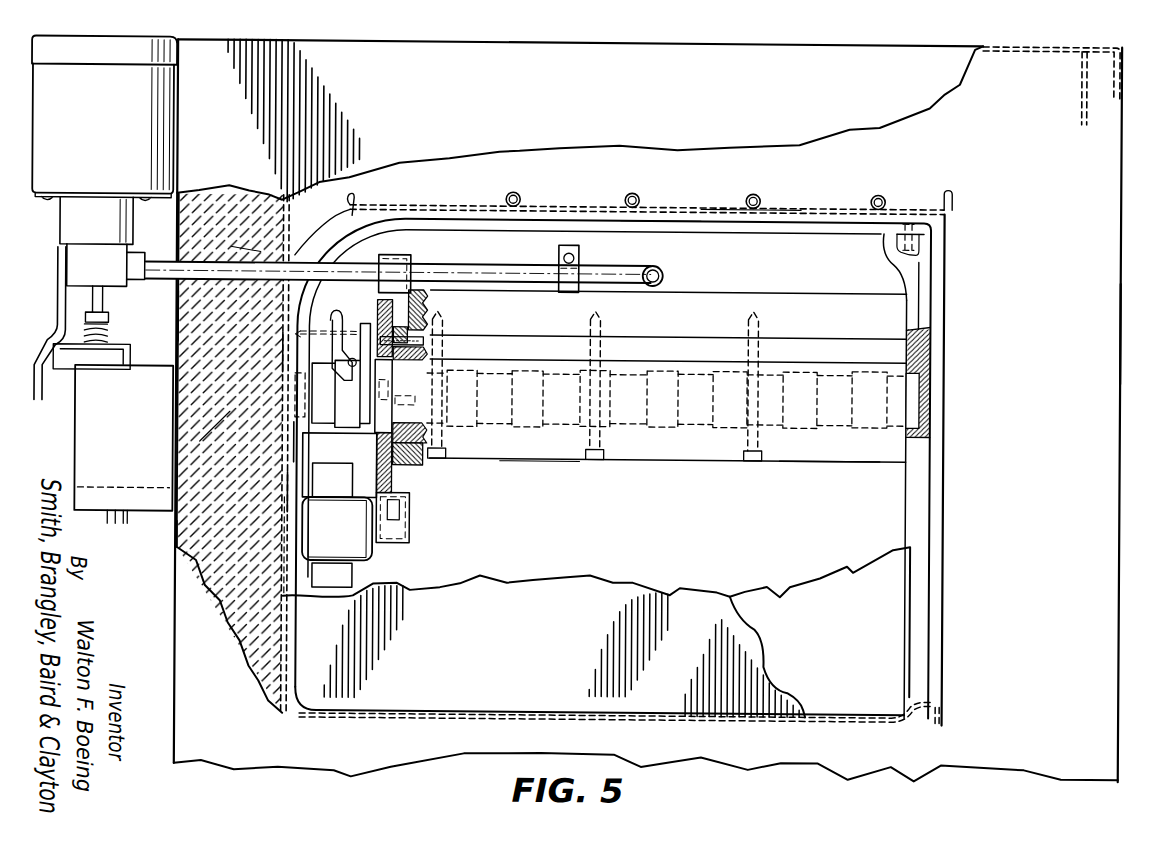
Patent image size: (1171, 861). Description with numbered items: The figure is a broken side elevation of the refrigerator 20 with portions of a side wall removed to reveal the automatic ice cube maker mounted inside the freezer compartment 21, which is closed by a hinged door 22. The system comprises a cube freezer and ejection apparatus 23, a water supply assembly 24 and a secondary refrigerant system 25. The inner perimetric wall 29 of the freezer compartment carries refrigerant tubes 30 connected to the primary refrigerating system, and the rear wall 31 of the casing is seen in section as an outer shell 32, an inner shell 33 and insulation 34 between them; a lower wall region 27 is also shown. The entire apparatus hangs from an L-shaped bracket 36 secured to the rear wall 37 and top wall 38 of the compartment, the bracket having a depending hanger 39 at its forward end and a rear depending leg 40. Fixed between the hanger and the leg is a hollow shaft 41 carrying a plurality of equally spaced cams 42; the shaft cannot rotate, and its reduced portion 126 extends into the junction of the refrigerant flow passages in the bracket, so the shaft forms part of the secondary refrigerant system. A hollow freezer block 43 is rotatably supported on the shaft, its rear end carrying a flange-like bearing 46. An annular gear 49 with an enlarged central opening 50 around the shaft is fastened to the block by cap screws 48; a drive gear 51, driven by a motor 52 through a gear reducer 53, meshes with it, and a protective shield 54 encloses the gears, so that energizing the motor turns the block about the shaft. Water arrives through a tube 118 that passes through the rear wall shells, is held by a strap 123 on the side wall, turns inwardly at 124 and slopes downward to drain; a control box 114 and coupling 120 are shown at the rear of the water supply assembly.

The refrigerator 20 is at (803, 69).
The freezer compartment 21 is at (1121, 330).
The hinged door 22 is at (291, 275).
The cube freezer and ejection apparatus 23 is at (919, 260).
The water supply assembly 24 is at (111, 130).
The secondary refrigerant system 25 is at (710, 229).
The bottom wall opening 27 is at (821, 598).
The inner perimetric wall 29 is at (821, 205).
The refrigerant tubes 30 is at (519, 197).
The rear wall 31 is at (181, 553).
The outer shell 32 is at (186, 324).
The inner shell 33 is at (282, 356).
The insulation 34 is at (228, 430).
The bracket 36 is at (659, 221).
The rear wall of the freezer compartment 37 is at (283, 494).
The top wall 38 is at (783, 206).
The depending hanger 39 is at (921, 311).
The rear depending leg 40 is at (288, 444).
The hollow tube or shaft 41 is at (520, 403).
The cams 42 is at (573, 418).
The hollow casing or block 43 is at (828, 459).
The flange-like bearing 46 is at (365, 475).
The cap screws 48 is at (401, 395).
The annular gear 49 is at (397, 318).
The enlarged central opening 50 is at (412, 343).
The drive gear 51 is at (385, 530).
The motor 52 is at (358, 550).
The gear reducer 53 is at (397, 480).
The protective shield 54 is at (412, 265).
The control box 114 is at (140, 425).
The tube 118 is at (246, 254).
The coupling 120 is at (143, 251).
The strap 123 is at (580, 265).
The inward turn of the tube 124 is at (664, 279).
The reduced portion 126 is at (294, 415).